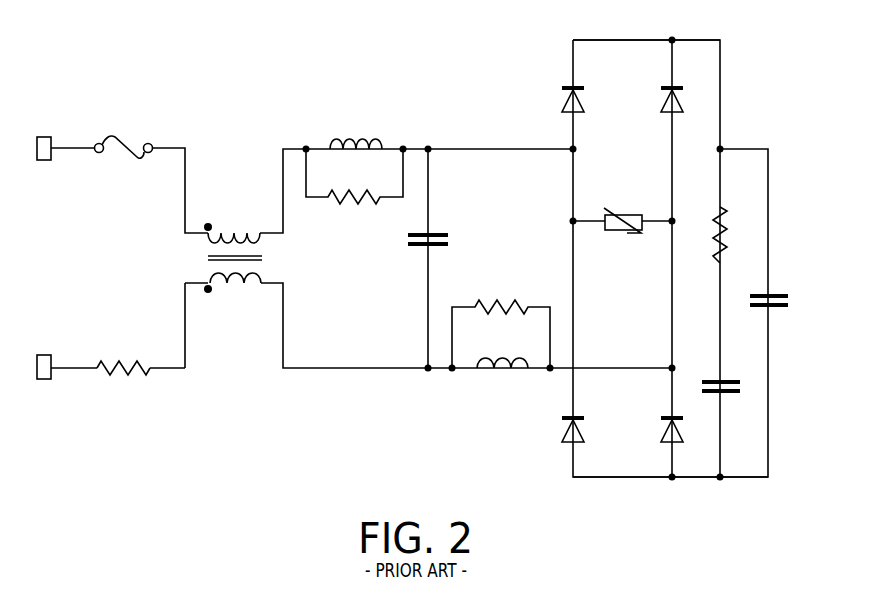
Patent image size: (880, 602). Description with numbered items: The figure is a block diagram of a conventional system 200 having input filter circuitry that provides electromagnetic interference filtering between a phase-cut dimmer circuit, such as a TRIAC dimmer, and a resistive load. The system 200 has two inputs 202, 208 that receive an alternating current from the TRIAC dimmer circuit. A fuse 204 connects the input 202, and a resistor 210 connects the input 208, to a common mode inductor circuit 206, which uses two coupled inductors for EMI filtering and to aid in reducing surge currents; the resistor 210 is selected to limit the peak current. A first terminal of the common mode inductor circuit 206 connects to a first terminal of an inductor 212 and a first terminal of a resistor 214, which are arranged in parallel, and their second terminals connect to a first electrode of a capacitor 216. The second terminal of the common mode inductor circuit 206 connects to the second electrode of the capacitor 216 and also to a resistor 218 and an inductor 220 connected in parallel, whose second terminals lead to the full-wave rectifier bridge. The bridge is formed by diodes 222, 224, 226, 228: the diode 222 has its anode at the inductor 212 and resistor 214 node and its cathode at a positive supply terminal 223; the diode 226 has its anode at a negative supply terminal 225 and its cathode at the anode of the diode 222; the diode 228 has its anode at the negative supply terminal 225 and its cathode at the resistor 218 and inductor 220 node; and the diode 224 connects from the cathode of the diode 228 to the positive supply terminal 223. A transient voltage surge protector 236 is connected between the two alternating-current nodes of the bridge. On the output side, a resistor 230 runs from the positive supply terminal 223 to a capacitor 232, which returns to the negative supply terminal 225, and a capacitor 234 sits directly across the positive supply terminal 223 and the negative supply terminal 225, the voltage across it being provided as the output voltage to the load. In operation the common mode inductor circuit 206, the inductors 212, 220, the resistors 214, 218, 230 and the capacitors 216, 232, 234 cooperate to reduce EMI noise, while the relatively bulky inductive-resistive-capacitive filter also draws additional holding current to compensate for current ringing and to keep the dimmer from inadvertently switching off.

The system 200 is at (109, 52).
The input 202 is at (66, 152).
The fuse 204 is at (114, 137).
The common mode inductor circuit 206 is at (236, 232).
The input 208 is at (66, 370).
The resistor 210 is at (117, 362).
The inductor 212 is at (362, 130).
The resistor 214 is at (352, 203).
The capacitor 216 is at (441, 232).
The resistor 218 is at (494, 302).
The inductor 220 is at (498, 372).
The diode 222 is at (581, 86).
The positive supply terminal 223 is at (622, 38).
The diode 224 is at (665, 86).
The negative supply terminal 225 is at (627, 479).
The diode 226 is at (581, 416).
The diode 228 is at (665, 416).
The resistor 230 is at (732, 228).
The capacitor 232 is at (733, 380).
The capacitor 234 is at (776, 294).
The transient voltage surge protector 236 is at (628, 212).